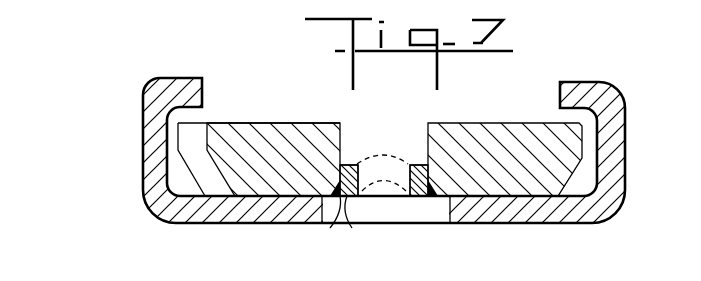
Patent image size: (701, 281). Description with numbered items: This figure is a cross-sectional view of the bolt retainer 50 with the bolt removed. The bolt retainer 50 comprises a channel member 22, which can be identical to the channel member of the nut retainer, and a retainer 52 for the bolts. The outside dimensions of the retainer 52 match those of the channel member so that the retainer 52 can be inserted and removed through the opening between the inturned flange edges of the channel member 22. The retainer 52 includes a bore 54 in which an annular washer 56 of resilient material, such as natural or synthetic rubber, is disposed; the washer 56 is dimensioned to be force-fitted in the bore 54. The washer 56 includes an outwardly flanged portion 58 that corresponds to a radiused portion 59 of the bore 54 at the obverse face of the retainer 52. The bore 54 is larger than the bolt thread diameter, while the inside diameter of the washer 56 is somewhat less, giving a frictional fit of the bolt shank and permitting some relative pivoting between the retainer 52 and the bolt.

The channel member 22 is at (136, 131).
The bolt retainer 50 is at (509, 110).
The retainer 52 is at (248, 132).
The bore 54 is at (398, 140).
The annular washer 56 is at (347, 164).
The outwardly flanged portion 58 is at (351, 228).
The radiused portion 59 is at (330, 228).